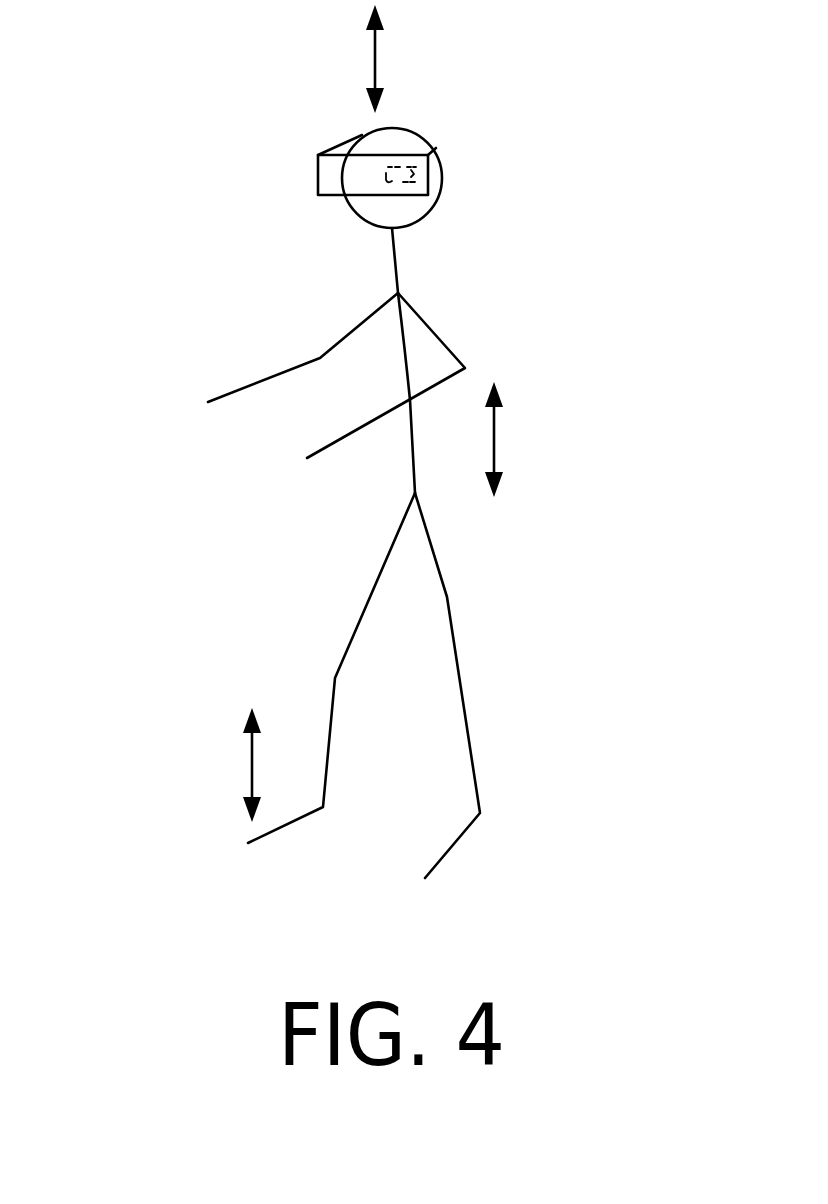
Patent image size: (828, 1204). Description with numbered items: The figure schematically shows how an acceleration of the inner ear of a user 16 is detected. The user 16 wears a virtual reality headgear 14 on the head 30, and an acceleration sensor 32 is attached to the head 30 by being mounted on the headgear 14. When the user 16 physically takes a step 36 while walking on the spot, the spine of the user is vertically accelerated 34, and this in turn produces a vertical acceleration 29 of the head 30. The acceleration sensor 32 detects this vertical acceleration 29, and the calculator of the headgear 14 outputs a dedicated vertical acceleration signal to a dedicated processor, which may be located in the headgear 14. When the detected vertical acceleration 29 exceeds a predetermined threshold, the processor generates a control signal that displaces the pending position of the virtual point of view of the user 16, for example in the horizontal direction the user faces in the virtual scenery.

The virtual reality headgear 14 is at (317, 172).
The user 16 is at (392, 297).
The vertical acceleration 29 is at (375, 60).
The head 30 is at (417, 138).
The acceleration sensor 32 is at (390, 175).
The vertical acceleration of the spine 34 is at (494, 433).
The step 36 is at (252, 765).